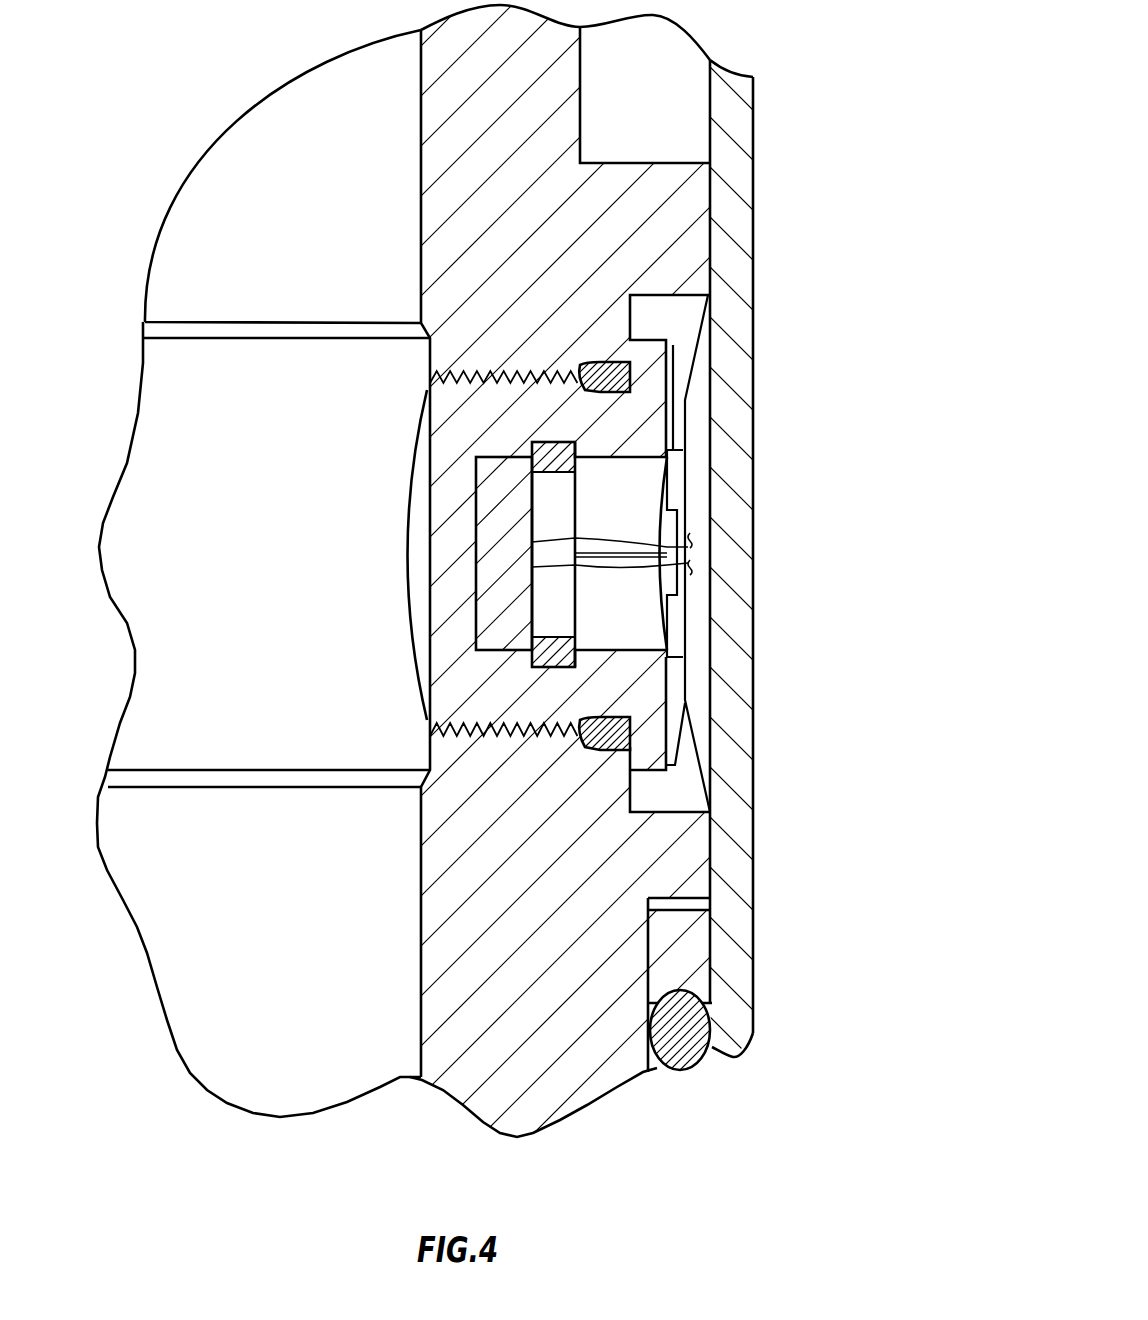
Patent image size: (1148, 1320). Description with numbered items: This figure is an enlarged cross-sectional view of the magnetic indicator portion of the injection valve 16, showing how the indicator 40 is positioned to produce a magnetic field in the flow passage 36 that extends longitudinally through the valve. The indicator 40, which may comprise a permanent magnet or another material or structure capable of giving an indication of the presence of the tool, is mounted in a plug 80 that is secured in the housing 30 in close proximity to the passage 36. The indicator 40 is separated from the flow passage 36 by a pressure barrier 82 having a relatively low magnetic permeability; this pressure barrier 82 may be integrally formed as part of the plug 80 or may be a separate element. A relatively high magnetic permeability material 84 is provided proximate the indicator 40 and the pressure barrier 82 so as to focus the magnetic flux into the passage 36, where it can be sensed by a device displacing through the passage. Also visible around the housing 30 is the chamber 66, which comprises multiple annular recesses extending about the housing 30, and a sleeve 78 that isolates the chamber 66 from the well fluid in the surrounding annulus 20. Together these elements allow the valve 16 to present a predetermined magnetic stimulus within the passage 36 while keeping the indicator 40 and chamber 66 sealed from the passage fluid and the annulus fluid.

The injection valve 16 is at (804, 565).
The annulus 20 is at (891, 587).
The housing 30 is at (420, 72).
The flow passage 36 is at (311, 901).
The indicator 40 is at (473, 557).
The chamber 66 is at (582, 127).
The sleeve 78 is at (755, 742).
The plug 80 is at (685, 427).
The pressure barrier 82 is at (425, 528).
The high magnetic permeability material 84 is at (505, 652).